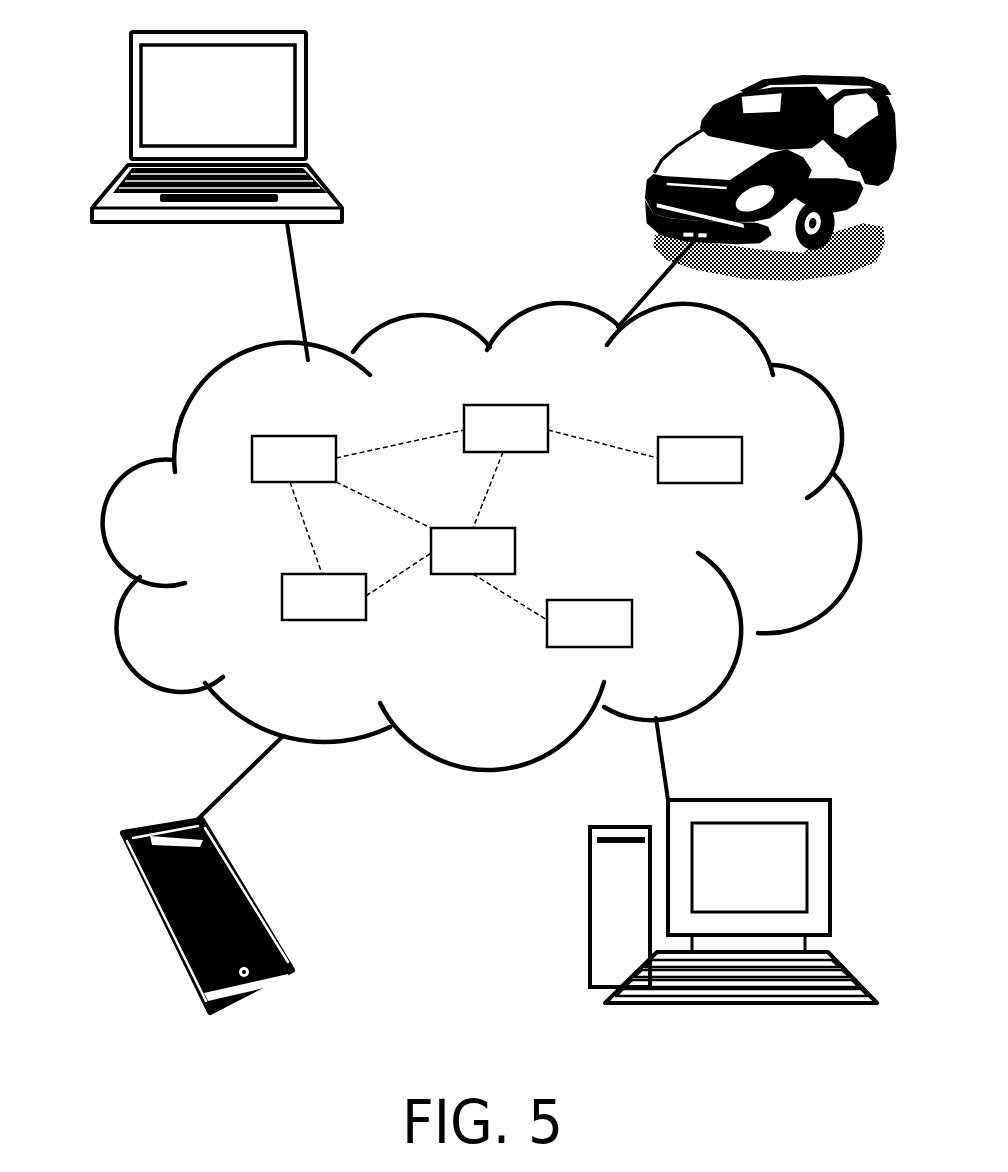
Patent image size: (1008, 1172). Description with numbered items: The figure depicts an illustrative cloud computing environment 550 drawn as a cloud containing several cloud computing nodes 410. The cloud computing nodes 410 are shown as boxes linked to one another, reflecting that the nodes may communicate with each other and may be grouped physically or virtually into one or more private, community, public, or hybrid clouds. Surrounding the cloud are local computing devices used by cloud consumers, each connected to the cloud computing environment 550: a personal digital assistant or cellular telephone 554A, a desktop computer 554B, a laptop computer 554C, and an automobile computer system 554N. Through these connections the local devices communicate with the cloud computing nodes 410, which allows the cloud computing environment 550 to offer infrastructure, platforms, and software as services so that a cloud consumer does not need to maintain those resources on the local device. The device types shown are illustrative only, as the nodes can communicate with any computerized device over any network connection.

The cloud computing node 410 is at (497, 526).
The cloud computing environment 550 is at (168, 442).
The personal digital assistant or cellular telephone 554A is at (125, 845).
The desktop computer 554B is at (590, 953).
The laptop computer 554C is at (130, 115).
The automobile computer system 554N is at (648, 188).